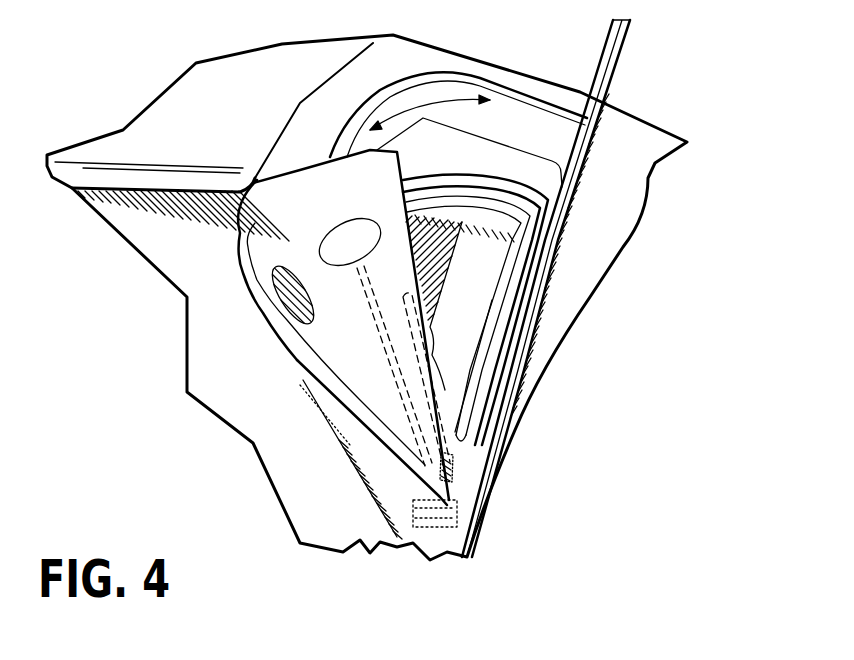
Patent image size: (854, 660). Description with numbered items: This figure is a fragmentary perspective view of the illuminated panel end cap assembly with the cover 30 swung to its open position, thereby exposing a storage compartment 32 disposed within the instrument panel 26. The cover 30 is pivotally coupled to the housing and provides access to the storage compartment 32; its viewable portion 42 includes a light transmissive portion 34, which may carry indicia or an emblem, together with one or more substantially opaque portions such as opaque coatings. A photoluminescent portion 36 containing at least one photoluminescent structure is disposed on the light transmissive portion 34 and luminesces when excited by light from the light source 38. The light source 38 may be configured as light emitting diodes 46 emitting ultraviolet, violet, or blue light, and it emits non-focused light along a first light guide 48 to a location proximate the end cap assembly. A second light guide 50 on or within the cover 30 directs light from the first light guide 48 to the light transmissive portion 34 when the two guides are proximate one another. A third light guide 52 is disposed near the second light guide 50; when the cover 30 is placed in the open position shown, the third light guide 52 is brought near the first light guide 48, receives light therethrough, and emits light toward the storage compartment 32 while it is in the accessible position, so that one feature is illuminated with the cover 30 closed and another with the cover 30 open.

The instrument panel 26 is at (200, 108).
The cover 30 is at (343, 353).
The storage compartment 32 is at (470, 293).
The light transmissive portion 34 is at (338, 249).
The photoluminescent portion 36 is at (341, 265).
The light source 38 is at (453, 530).
The viewable portion 42 is at (243, 240).
The light emitting diodes 46 is at (432, 518).
The first light guide 48 is at (450, 467).
The second light guide 50 is at (400, 392).
The third light guide 52 is at (440, 390).